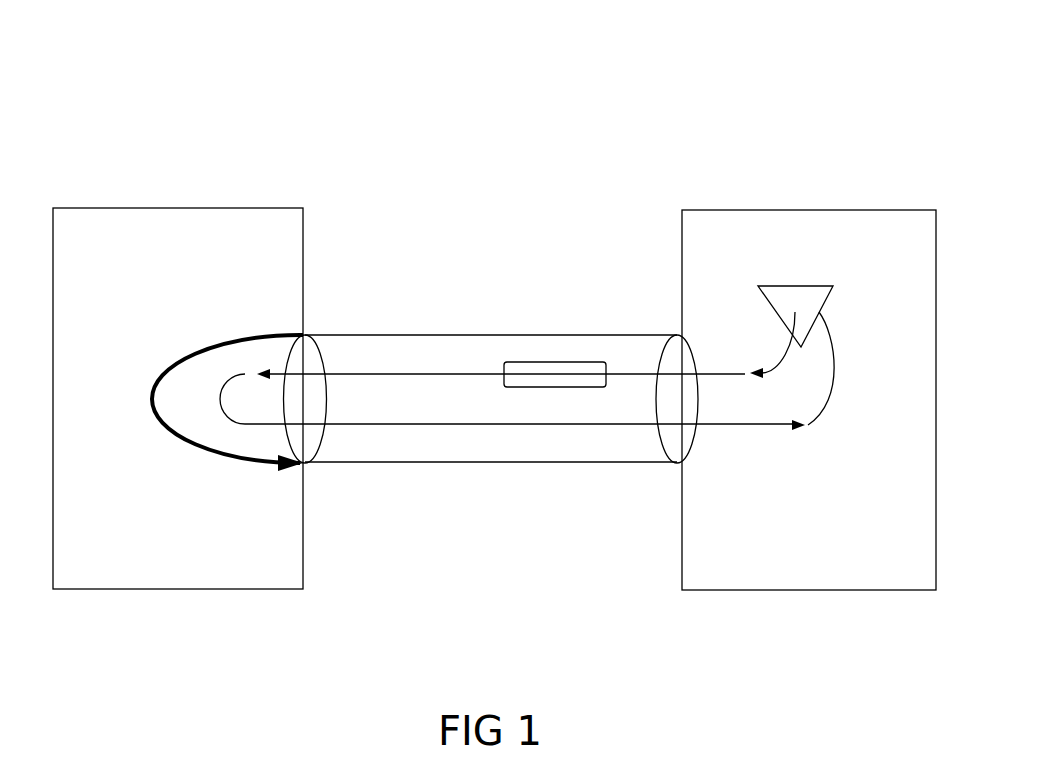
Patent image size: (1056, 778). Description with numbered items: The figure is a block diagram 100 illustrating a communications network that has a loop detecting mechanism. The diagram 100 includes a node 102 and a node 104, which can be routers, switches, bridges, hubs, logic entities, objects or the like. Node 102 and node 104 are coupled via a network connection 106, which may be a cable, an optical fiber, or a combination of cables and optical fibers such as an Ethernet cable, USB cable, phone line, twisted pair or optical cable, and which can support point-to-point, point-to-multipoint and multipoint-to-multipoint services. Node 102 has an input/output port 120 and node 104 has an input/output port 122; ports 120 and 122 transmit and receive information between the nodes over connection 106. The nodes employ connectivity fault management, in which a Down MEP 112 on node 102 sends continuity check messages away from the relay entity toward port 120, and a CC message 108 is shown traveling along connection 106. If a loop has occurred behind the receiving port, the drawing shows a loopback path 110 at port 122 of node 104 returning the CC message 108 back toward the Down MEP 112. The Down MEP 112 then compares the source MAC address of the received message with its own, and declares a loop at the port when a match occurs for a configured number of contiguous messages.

The block diagram 100 is at (1015, 86).
The node 102 is at (782, 592).
The node 104 is at (265, 593).
The network connection 106 is at (558, 463).
The CC message 108 is at (594, 371).
The loopback path 110 is at (254, 333).
The Down MEP 112 is at (808, 312).
The input/output port 120 is at (683, 438).
The input/output port 122 is at (303, 444).